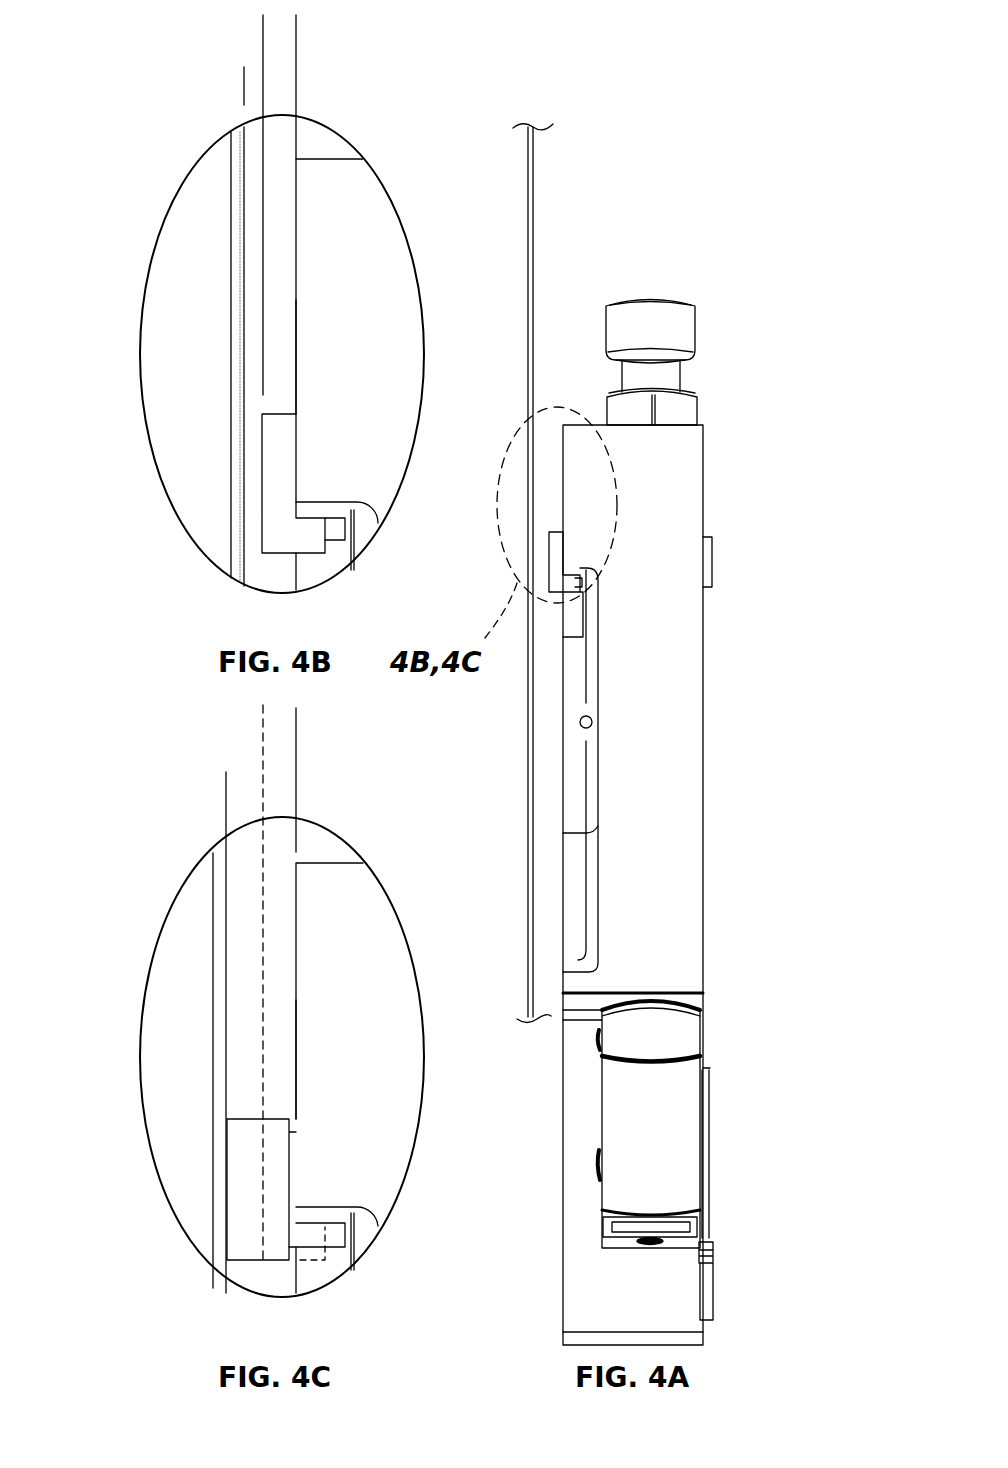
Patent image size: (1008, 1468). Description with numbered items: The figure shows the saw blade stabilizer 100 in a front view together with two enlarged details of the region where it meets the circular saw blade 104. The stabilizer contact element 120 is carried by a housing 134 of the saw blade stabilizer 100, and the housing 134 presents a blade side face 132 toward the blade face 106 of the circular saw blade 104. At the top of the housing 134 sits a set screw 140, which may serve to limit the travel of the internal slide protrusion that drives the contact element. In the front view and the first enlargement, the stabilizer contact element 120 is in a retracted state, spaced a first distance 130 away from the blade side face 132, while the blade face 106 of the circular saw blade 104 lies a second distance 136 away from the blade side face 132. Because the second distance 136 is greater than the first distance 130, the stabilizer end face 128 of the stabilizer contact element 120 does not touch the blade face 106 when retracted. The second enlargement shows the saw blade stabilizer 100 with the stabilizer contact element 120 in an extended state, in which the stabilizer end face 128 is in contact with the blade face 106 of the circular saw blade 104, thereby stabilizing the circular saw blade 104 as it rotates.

In FIG. 4A, the saw blade stabilizer 100 is at (732, 203).
In FIG. 4A, the circular saw blade 104 is at (503, 157).
In FIG. 4A, the blade face 106 is at (533, 241).
In FIG. 4B, the blade face 106 is at (250, 330).
In FIG. 4C, the blade face 106 is at (233, 1039).
In FIG. 4A, the stabilizer contact element 120 is at (707, 587).
In FIG. 4B, the stabilizer contact element 120 is at (283, 557).
In FIG. 4C, the stabilizer contact element 120 is at (248, 1257).
In FIG. 4A, the stabilizer end face 128 is at (549, 573).
In FIG. 4B, the stabilizer end face 128 is at (262, 485).
In FIG. 4C, the stabilizer end face 128 is at (227, 1190).
In FIG. 4B, the first distance 130 is at (225, 30).
In FIG. 4C, the first distance 130 is at (225, 717).
In FIG. 4A, the blade side face 132 is at (565, 500).
In FIG. 4B, the blade side face 132 is at (290, 334).
In FIG. 4C, the blade side face 132 is at (296, 1028).
In FIG. 4A, the housing 134 is at (678, 463).
In FIG. 4B, the housing 134 is at (378, 216).
In FIG. 4C, the housing 134 is at (337, 1044).
In FIG. 4B, the second distance 136 is at (335, 80).
In FIG. 4C, the second distance 136 is at (335, 784).
In FIG. 4A, the set screw 140 is at (678, 330).